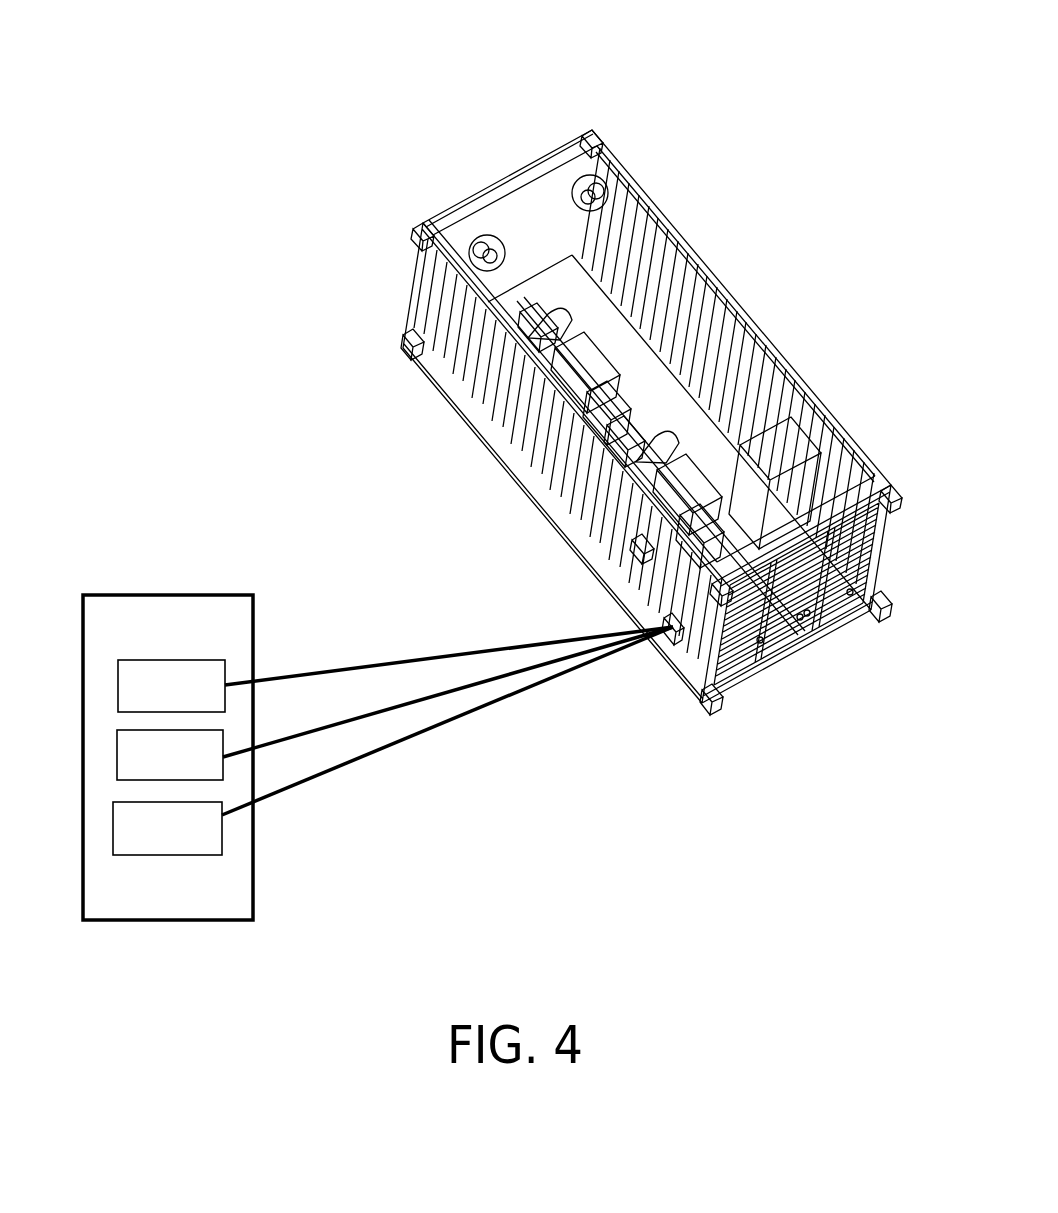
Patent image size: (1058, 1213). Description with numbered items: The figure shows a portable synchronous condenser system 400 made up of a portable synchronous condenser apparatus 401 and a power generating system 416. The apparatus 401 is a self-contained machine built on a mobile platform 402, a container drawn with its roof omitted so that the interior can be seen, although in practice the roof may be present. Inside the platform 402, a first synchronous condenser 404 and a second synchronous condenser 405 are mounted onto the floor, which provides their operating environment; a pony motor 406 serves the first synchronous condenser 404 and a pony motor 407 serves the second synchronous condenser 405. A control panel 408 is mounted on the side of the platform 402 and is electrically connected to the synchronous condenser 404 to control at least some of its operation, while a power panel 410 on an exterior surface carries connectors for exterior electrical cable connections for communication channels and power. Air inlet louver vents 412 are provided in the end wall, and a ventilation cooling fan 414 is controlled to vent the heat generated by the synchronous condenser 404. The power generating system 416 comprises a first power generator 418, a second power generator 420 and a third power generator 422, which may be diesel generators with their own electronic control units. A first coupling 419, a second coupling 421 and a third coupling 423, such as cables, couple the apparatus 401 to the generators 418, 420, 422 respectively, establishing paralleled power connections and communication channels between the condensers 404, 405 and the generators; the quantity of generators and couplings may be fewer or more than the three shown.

The portable synchronous condenser system 400 is at (157, 138).
The portable synchronous condenser apparatus 401 is at (513, 108).
The mobile platform 402 is at (428, 292).
The first synchronous condenser 404 is at (570, 338).
The second synchronous condenser 405 is at (670, 460).
The pony motor 406 is at (522, 308).
The pony motor 407 is at (600, 430).
The control panel 408 is at (638, 545).
The power panel 410 is at (673, 627).
The air inlet louver vent 412 is at (757, 598).
The ventilation cooling fan 414 is at (588, 172).
The power generating system 416 is at (170, 644).
The first power generator 418 is at (184, 701).
The first coupling 419 is at (425, 655).
The second power generator 420 is at (184, 771).
The second coupling 421 is at (445, 692).
The third power generator 422 is at (184, 846).
The third coupling 423 is at (387, 755).